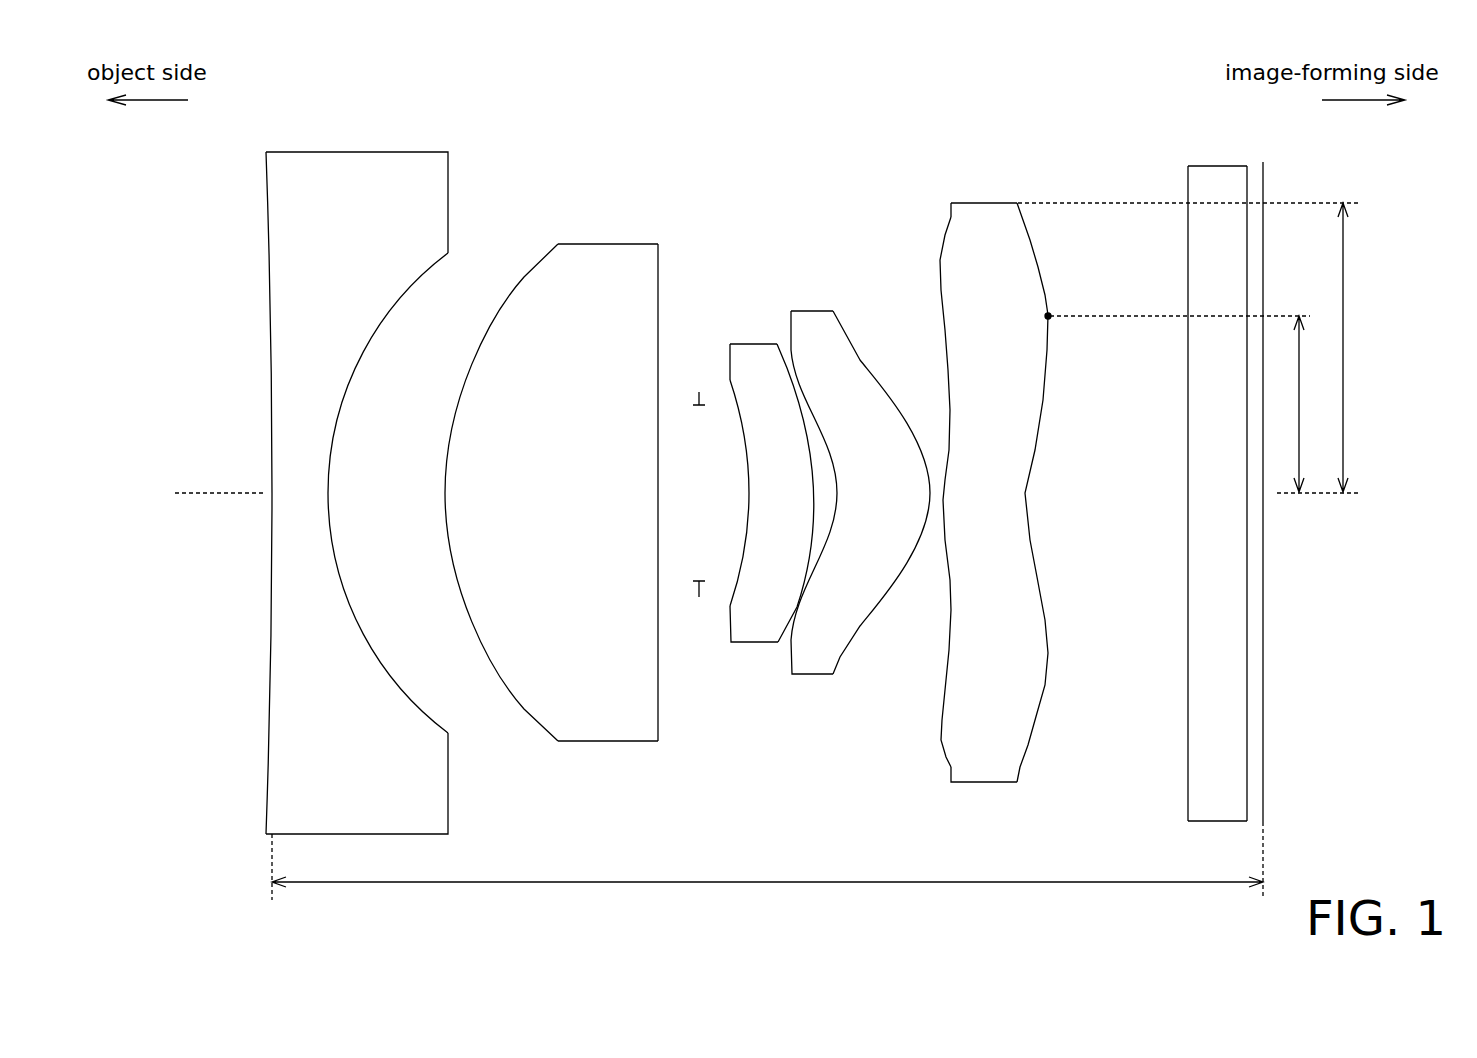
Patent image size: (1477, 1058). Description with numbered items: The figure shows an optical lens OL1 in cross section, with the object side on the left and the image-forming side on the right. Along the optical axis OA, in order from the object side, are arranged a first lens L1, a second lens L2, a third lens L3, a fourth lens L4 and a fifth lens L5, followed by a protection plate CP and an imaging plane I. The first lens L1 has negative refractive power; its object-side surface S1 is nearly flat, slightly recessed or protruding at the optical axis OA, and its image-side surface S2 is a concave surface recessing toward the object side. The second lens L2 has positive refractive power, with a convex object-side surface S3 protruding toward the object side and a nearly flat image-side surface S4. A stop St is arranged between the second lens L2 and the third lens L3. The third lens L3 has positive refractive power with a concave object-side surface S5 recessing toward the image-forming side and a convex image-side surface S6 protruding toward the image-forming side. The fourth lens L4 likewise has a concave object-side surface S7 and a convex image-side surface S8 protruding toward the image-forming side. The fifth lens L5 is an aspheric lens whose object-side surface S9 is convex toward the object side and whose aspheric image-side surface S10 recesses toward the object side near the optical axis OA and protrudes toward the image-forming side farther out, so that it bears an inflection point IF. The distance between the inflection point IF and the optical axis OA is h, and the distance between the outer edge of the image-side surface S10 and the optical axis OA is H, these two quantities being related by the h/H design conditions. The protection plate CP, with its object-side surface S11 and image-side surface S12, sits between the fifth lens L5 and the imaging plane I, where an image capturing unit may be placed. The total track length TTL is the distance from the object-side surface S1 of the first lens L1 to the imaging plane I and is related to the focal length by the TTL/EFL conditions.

The optical lens OL1 is at (212, 157).
The first lens L1 is at (307, 515).
The second lens L2 is at (574, 491).
The third lens L3 is at (760, 485).
The fourth lens L4 is at (860, 504).
The fifth lens L5 is at (1004, 526).
The object-side surface of the first lens S1 is at (266, 248).
The image-side surface of the first lens S2 is at (381, 325).
The object-side surface of the second lens S3 is at (527, 277).
The image-side surface of the second lens S4 is at (658, 278).
The object-side surface of the third lens S5 is at (745, 434).
The image-side surface of the third lens S6 is at (800, 393).
The object-side surface of the fourth lens S7 is at (790, 368).
The image-side surface of the fourth lens S8 is at (873, 360).
The object-side surface of the fifth lens S9 is at (940, 262).
The image-side surface of the fifth lens S10 is at (1038, 264).
The object-side surface of the protection plate S11 is at (1188, 427).
The image-side surface of the protection plate S12 is at (1247, 225).
The stop St is at (697, 590).
The inflection point IF is at (1048, 316).
The protection plate CP is at (1246, 514).
The imaging plane I is at (1263, 787).
The optical axis OA is at (789, 494).
The distance between the outer edge of the image-side surface of the fifth lens and H is at (1353, 347).
The distance between the inflection point and the optical axis h is at (1307, 404).
The total track length TTL is at (767, 873).